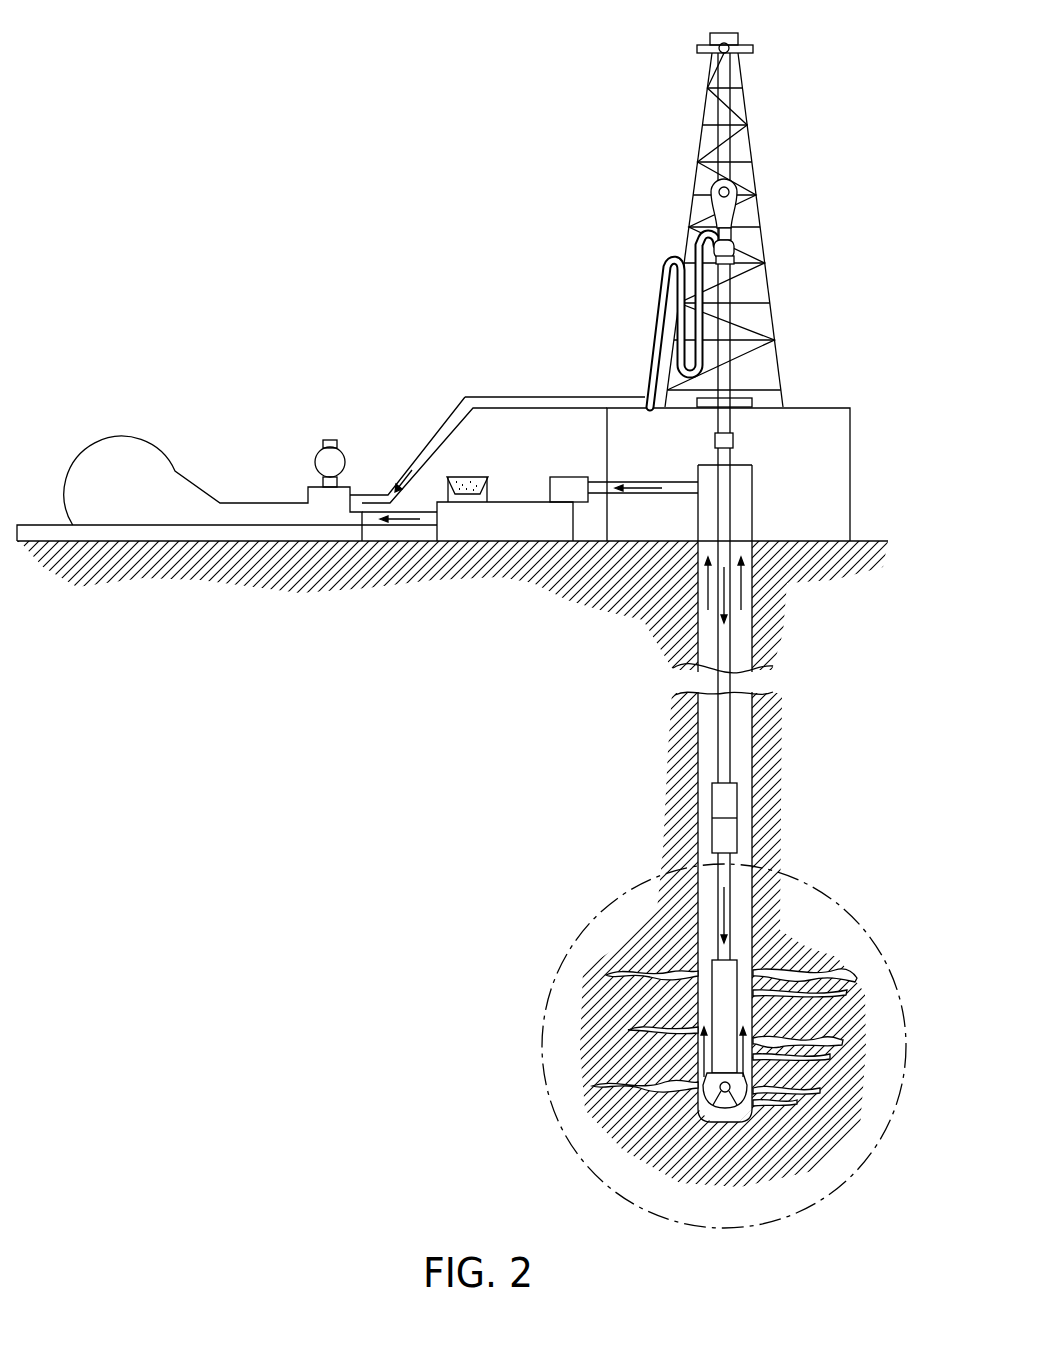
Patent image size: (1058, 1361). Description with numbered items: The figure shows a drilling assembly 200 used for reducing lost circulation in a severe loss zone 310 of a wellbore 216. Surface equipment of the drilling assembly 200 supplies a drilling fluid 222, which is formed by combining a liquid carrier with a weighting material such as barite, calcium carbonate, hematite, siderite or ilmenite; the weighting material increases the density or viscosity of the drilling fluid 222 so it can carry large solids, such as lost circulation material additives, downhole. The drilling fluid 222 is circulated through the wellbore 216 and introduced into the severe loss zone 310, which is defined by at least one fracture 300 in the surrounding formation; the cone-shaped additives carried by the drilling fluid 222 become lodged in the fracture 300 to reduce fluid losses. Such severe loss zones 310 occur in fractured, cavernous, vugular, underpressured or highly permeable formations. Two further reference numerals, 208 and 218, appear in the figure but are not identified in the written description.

The drilling assembly 200 is at (488, 184).
The drill string 208 is at (728, 637).
The wellbore 216 is at (755, 742).
The subterranean formation 218 is at (570, 789).
The drilling fluid 222 is at (706, 587).
The fracture 300 is at (846, 983).
The severe loss zone 310 is at (833, 1133).